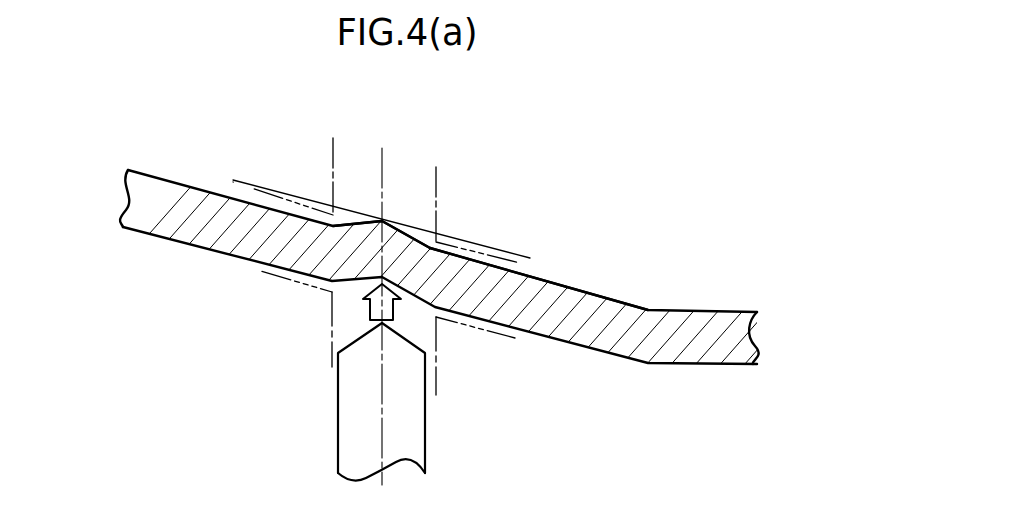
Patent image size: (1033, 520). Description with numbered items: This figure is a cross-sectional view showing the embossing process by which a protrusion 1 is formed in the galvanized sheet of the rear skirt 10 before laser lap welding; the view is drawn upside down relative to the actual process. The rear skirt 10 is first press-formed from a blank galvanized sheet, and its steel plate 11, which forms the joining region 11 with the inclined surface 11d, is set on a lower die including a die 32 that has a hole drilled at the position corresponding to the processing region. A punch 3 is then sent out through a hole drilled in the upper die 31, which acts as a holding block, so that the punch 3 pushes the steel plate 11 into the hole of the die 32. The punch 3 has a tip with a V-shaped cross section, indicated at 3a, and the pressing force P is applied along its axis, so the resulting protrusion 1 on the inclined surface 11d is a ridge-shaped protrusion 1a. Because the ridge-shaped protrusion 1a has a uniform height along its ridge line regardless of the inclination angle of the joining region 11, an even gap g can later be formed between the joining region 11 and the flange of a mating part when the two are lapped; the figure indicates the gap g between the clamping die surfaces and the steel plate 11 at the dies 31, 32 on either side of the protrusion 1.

The protrusion 1 is at (422, 189).
The ridge-shaped protrusion 1a is at (382, 221).
The punch 3 is at (338, 412).
The punch tip / center axis 3a is at (382, 298).
The rear skirt 10 is at (688, 312).
The joining region 11 is at (484, 264).
The inclined surface 11d is at (583, 285).
The upper die 31 is at (488, 375).
The die 32 is at (313, 151).
The gap g is at (230, 222).
The pressing force P is at (365, 307).